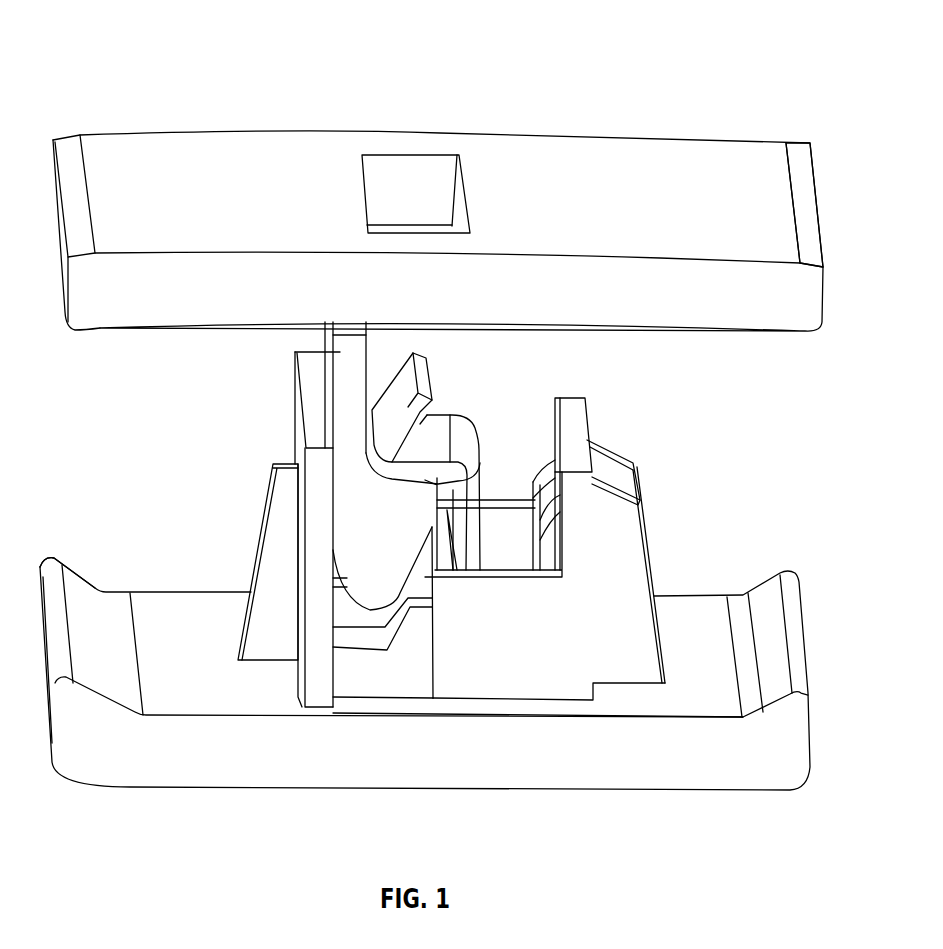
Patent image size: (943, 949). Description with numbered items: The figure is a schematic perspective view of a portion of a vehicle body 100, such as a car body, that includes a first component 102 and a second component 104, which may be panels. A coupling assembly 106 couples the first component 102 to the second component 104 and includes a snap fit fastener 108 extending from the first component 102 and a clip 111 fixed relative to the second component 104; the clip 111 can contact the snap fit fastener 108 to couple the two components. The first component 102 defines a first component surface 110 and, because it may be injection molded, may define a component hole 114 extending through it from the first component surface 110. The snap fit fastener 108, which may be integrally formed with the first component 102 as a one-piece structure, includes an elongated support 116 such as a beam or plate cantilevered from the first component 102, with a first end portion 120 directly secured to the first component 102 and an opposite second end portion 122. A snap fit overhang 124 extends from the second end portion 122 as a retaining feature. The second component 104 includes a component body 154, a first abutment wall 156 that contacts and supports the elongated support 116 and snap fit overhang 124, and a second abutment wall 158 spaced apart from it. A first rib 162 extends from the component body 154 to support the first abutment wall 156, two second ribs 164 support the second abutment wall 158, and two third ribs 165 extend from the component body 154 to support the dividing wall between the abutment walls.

The vehicle body 100 is at (130, 41).
The first component 102 is at (103, 142).
The second component 104 is at (732, 770).
The coupling assembly 106 is at (479, 383).
The snap fit fastener 108 is at (322, 358).
The first component surface 110 is at (752, 150).
The clip 111 is at (463, 432).
The component hole 114 is at (453, 223).
The elongated support 116 is at (325, 328).
The first end portion 120 is at (390, 330).
The second end portion 122 is at (348, 465).
The snap fit overhang 124 is at (377, 555).
The component body 154 is at (197, 768).
The first abutment wall 156 is at (295, 420).
The second abutment wall 158 is at (577, 430).
The first rib 162 is at (255, 632).
The second rib 164 is at (625, 480).
The third rib 165 is at (383, 615).